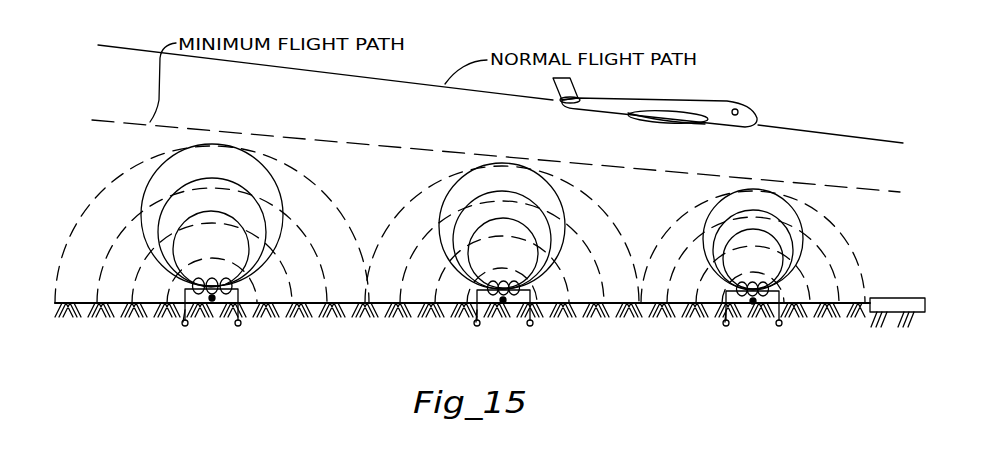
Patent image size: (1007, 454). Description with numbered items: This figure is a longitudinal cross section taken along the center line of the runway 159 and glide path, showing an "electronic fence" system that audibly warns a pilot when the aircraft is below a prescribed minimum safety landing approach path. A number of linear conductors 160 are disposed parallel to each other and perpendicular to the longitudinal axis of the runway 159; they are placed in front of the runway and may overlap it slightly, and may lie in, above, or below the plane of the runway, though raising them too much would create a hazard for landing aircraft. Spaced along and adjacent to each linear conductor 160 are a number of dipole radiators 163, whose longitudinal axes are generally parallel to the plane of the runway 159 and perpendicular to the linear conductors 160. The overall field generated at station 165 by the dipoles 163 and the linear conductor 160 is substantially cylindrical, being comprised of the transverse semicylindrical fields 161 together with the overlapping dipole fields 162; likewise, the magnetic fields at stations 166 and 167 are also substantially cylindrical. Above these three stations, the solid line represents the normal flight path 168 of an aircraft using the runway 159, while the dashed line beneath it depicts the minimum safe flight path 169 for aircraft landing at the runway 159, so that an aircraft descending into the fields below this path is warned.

The runway 159 is at (878, 298).
The linear conductor 160 is at (212, 300).
The transverse semicylindrical field 161 is at (103, 188).
The dipole field 162 is at (213, 143).
The dipole radiator 163 is at (238, 327).
The station 165 is at (200, 329).
The station 166 is at (495, 328).
The station 167 is at (743, 329).
The normal flight path 168 is at (838, 133).
The minimum safe flight path 169 is at (837, 186).